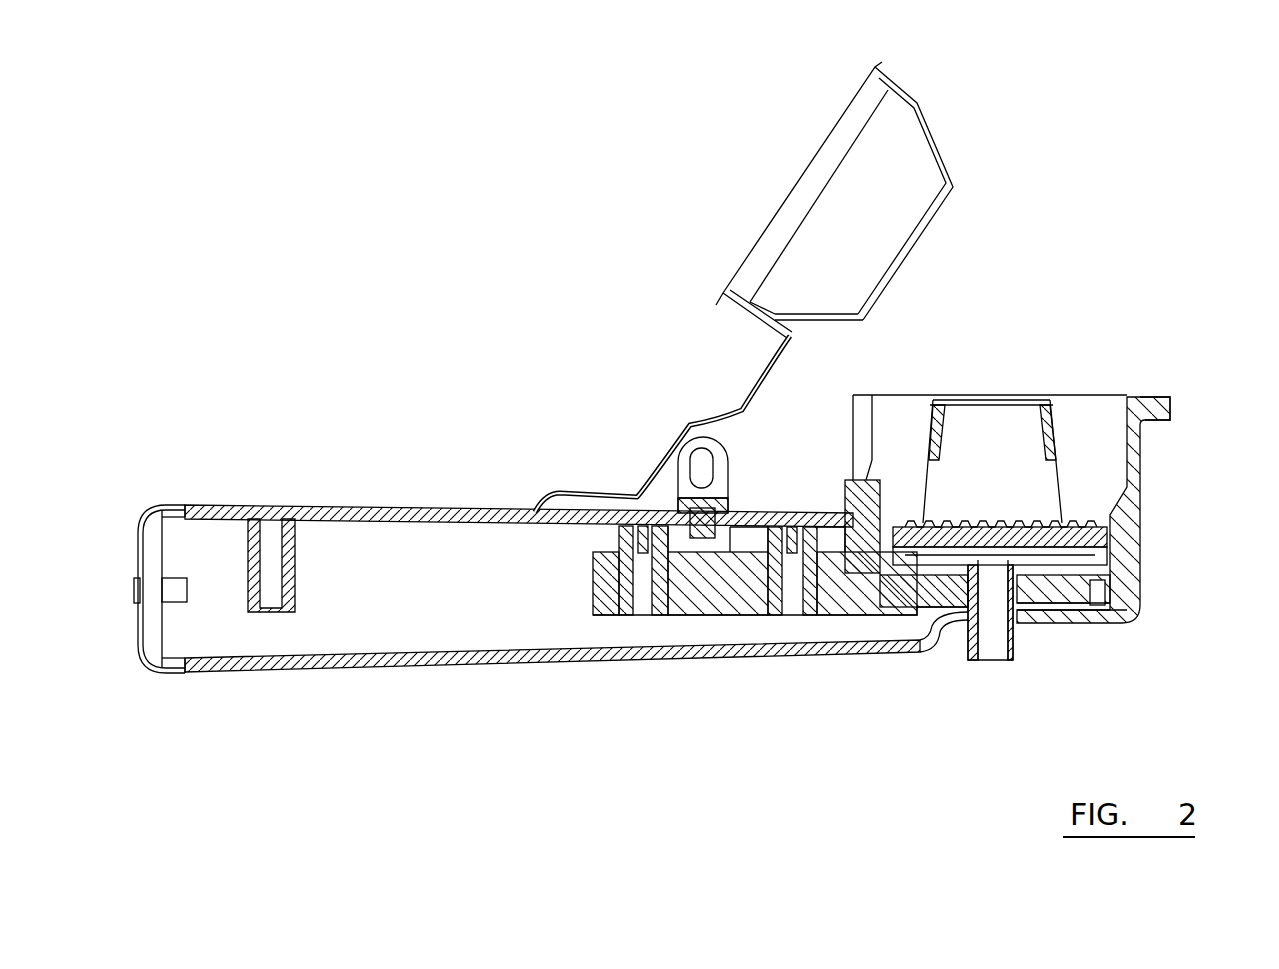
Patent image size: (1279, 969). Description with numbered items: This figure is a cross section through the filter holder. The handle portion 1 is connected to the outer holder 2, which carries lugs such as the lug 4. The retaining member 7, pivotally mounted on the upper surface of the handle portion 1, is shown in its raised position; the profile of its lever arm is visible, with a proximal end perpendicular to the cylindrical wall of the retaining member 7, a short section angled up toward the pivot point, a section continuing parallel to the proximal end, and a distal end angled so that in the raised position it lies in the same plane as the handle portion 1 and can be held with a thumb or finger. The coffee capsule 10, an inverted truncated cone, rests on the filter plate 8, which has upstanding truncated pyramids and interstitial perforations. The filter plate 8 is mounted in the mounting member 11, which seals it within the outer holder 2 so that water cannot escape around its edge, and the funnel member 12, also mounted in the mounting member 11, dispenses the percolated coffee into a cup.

The handle portion 1 is at (435, 668).
The outer holder 2 is at (1141, 505).
The lug 4 is at (1170, 397).
The retaining member 7 is at (727, 292).
The filter plate 8 is at (1092, 520).
The coffee capsule 10 is at (1048, 400).
The mounting member 11 is at (1135, 570).
The funnel member 12 is at (967, 650).